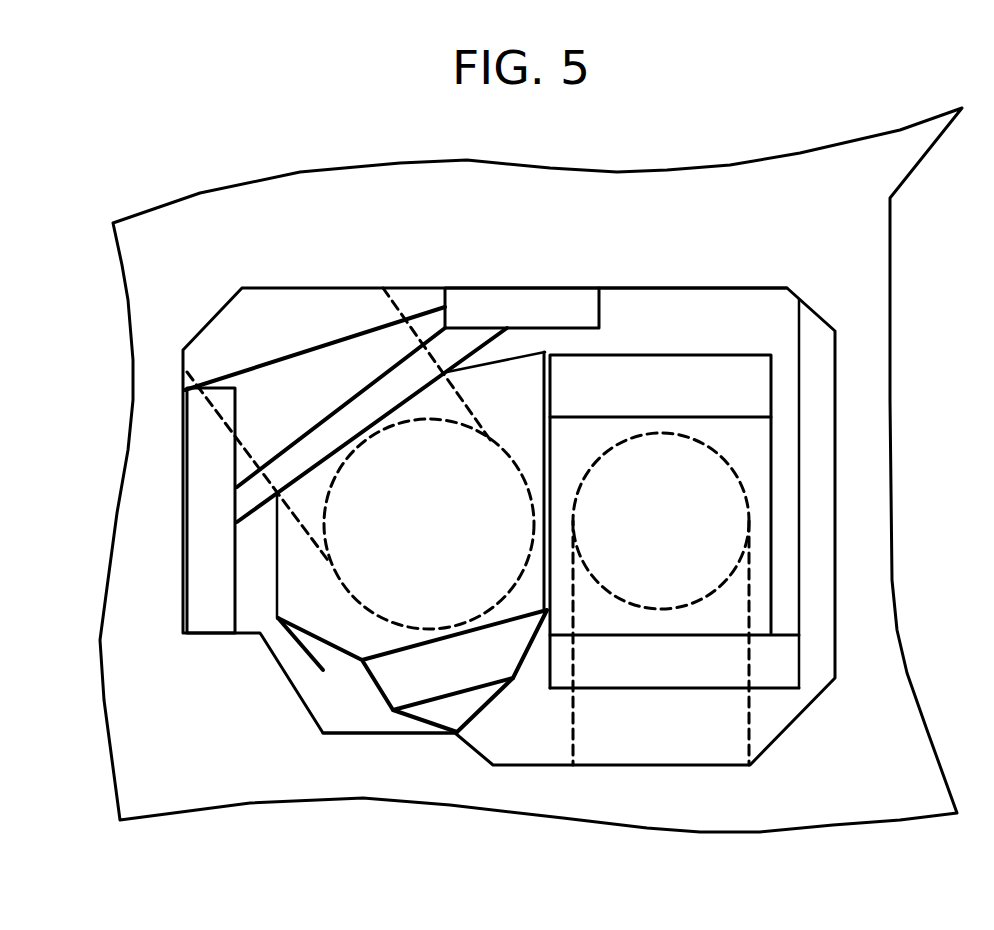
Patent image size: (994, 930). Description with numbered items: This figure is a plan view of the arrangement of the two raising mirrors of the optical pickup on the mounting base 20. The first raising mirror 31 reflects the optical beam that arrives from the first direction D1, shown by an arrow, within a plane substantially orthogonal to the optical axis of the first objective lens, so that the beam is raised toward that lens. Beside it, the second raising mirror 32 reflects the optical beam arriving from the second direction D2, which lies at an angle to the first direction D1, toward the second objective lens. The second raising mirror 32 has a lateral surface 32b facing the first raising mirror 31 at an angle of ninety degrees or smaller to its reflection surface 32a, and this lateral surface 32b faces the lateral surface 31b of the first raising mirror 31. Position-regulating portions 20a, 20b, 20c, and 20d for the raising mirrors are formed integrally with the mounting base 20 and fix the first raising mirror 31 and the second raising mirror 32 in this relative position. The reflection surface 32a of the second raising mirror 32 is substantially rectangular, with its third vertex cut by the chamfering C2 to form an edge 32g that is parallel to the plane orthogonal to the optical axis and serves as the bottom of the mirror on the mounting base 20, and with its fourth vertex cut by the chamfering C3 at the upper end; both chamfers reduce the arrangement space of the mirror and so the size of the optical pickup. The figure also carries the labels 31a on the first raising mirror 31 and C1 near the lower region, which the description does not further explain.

The mounting base 20 is at (883, 325).
The position-regulating portion 20a is at (782, 660).
The position-regulating portion 20b is at (687, 294).
The position-regulating portion 20c is at (257, 497).
The position-regulating portion 20d is at (460, 705).
The first raising mirror 31 is at (760, 388).
The hole of first holding member 31a is at (760, 448).
The lateral surface 31b is at (543, 350).
The second raising mirror 32 is at (293, 560).
The reflection surface 32a is at (365, 642).
The lateral surface 32b is at (527, 652).
The edge 32g is at (315, 467).
The first center line C1 is at (552, 690).
The chamfering C2 is at (343, 449).
The chamfering C3 is at (325, 663).
The first direction D1 is at (664, 712).
The second direction D2 is at (290, 340).